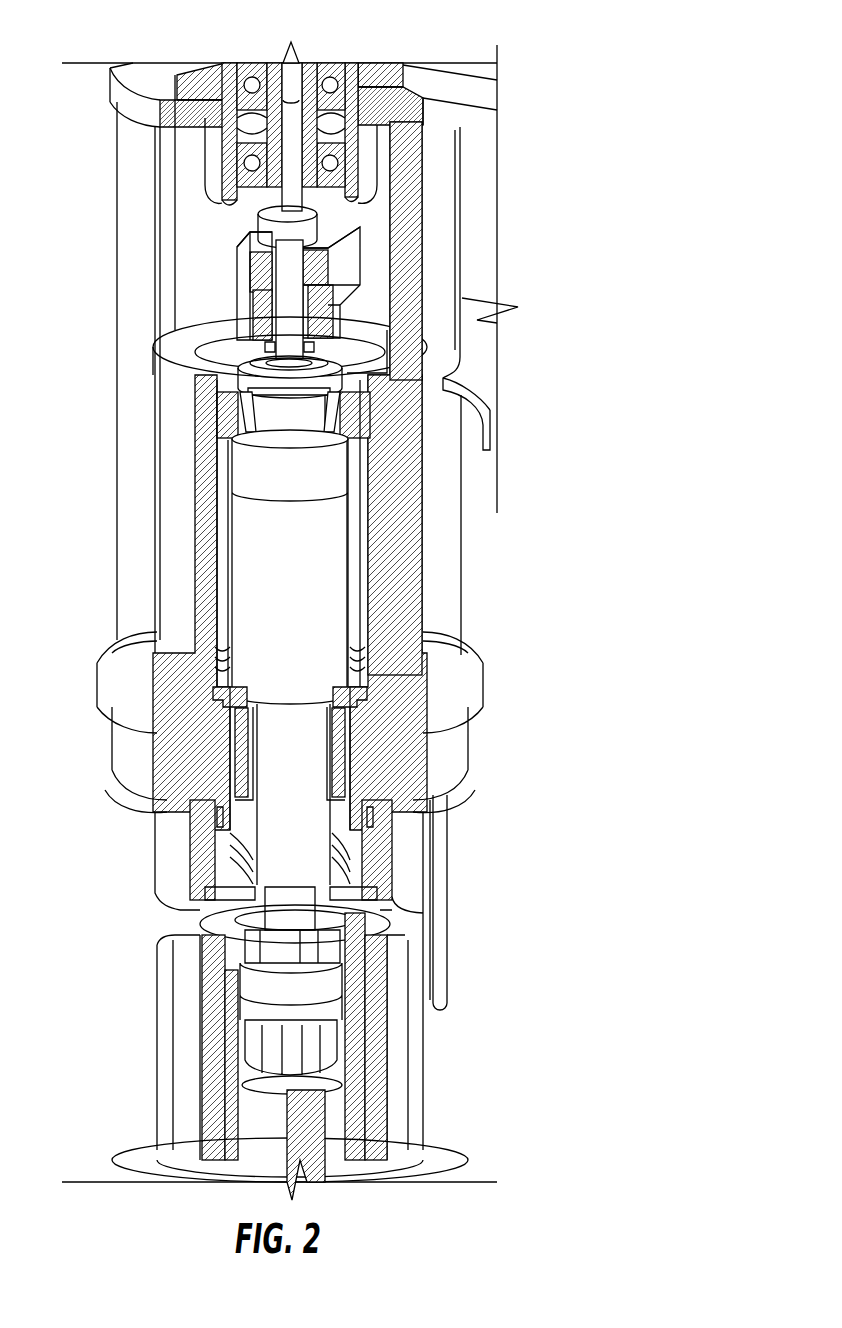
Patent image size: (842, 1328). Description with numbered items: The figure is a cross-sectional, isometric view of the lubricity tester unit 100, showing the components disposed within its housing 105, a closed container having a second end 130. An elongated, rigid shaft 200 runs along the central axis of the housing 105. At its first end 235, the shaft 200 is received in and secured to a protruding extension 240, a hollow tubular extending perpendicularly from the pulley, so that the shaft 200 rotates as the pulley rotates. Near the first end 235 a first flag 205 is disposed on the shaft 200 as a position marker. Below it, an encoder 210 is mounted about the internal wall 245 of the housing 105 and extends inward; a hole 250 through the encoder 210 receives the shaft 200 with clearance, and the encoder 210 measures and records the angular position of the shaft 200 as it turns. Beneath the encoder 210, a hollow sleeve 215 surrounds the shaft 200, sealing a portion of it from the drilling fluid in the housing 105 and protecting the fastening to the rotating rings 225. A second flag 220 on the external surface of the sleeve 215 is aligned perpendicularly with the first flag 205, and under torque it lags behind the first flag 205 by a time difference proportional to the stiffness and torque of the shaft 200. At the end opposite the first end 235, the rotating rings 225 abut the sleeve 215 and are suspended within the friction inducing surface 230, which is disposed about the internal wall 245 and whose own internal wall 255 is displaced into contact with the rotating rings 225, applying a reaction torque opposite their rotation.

The lubricity tester unit 100 is at (530, 517).
The housing 105 is at (466, 594).
The second end 130 is at (405, 67).
The shaft 200 is at (295, 272).
The first flag 205 is at (310, 220).
The encoder 210 is at (236, 272).
The sleeve 215 is at (262, 540).
The second flag 220 is at (315, 470).
The rotating rings 225 is at (252, 981).
The friction inducing surface 230 is at (356, 1005).
The first end 235 is at (295, 128).
The protruding extension 240 is at (212, 141).
The internal wall 245 is at (180, 192).
The hole 250 is at (245, 236).
The internal wall 255 is at (350, 922).